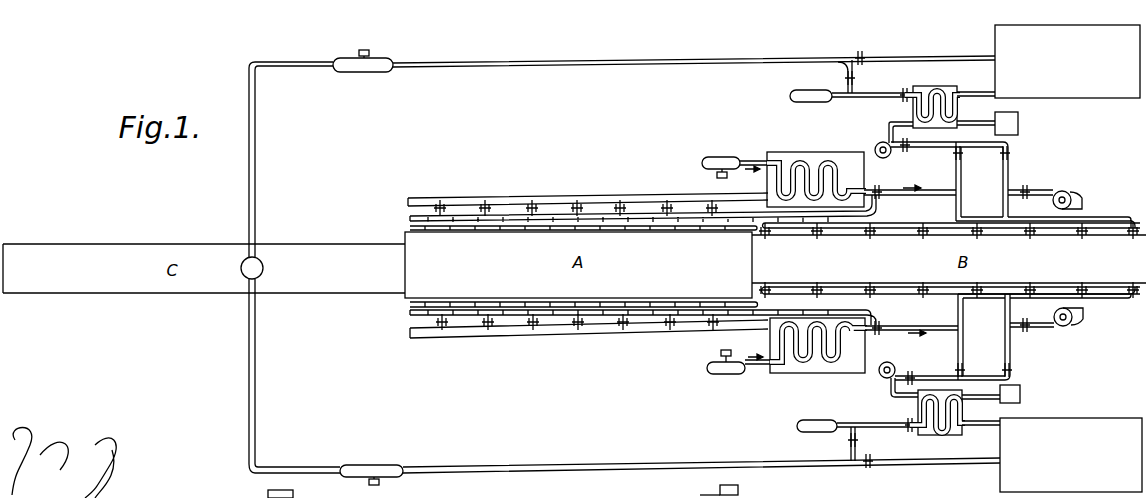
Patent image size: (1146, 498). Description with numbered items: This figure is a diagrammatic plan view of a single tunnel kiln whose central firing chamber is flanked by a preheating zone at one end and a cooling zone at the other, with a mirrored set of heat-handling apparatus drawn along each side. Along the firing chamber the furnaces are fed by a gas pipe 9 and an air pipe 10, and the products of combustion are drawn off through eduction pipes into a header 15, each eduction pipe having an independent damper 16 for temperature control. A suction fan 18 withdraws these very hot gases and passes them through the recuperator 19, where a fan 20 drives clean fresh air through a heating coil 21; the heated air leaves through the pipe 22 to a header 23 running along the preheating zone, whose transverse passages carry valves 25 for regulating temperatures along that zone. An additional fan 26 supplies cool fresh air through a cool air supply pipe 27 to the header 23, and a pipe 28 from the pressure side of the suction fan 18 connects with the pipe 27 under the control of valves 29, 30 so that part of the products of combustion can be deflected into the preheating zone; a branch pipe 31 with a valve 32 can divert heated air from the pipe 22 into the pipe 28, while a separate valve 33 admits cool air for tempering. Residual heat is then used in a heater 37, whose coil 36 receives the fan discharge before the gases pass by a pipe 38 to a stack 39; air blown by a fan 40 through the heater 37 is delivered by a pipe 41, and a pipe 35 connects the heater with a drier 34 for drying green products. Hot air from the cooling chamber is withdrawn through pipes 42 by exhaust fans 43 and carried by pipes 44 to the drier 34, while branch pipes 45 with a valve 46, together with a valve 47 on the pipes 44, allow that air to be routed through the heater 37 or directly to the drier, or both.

The gas pipe 9 is at (410, 228).
The air pipe 10 is at (410, 216).
The header 15 is at (651, 197).
The damper 16 is at (575, 205).
The suction fan 18 is at (881, 142).
The recuperator 19 is at (768, 181).
The fan 20 is at (724, 157).
The heating coil 21 is at (852, 183).
The pipe 22 is at (925, 197).
The header 23 is at (1001, 199).
The valve 25 is at (1090, 217).
The fan 26 is at (1070, 193).
The cool air supply pipe 27 is at (1009, 210).
The pipe 28 is at (938, 148).
The valve 29 is at (905, 152).
The valve 30 is at (1010, 153).
The branch pipe 31 is at (962, 182).
The valve 32 is at (962, 153).
The valve 33 is at (1025, 189).
The drier 34 is at (1068, 258).
The pipe 35 is at (971, 92).
The coil 36 is at (944, 106).
The heater 37 is at (907, 102).
The pipe 38 is at (972, 122).
The stack 39 is at (1017, 126).
The fan 40 is at (816, 91).
The pipe 41 is at (872, 97).
The pipe 42 is at (256, 217).
The exhaust fan 43 is at (366, 73).
The pipe 44 is at (597, 66).
The branch pipe 45 is at (845, 474).
The valve 46 is at (856, 78).
The valve 47 is at (861, 55).